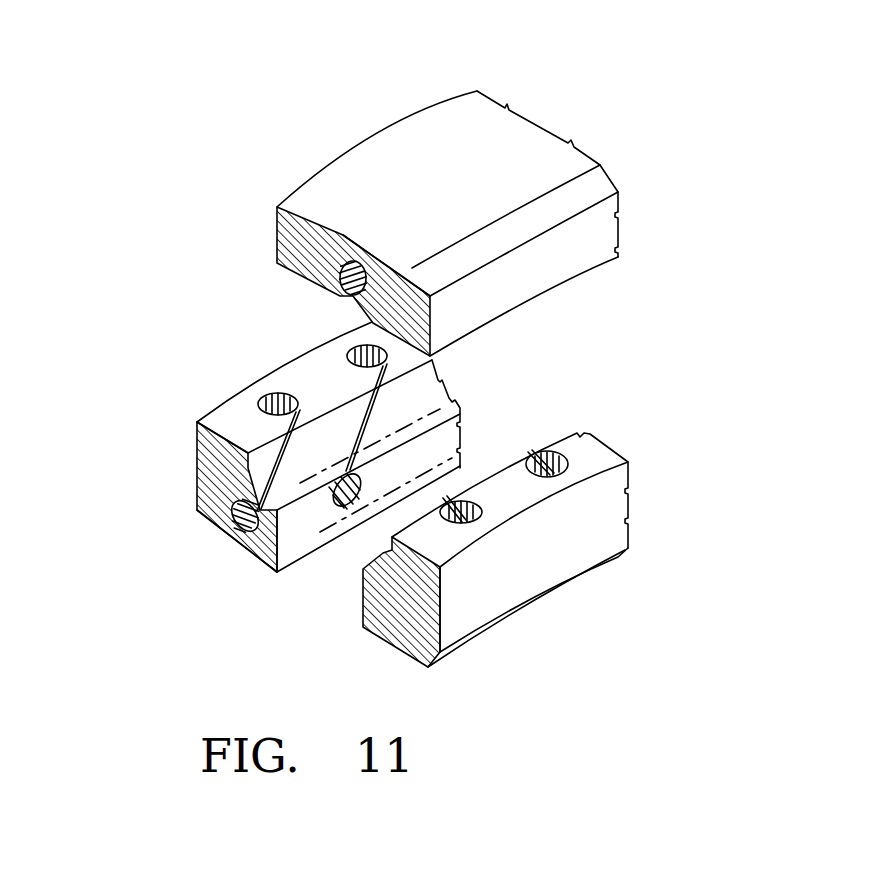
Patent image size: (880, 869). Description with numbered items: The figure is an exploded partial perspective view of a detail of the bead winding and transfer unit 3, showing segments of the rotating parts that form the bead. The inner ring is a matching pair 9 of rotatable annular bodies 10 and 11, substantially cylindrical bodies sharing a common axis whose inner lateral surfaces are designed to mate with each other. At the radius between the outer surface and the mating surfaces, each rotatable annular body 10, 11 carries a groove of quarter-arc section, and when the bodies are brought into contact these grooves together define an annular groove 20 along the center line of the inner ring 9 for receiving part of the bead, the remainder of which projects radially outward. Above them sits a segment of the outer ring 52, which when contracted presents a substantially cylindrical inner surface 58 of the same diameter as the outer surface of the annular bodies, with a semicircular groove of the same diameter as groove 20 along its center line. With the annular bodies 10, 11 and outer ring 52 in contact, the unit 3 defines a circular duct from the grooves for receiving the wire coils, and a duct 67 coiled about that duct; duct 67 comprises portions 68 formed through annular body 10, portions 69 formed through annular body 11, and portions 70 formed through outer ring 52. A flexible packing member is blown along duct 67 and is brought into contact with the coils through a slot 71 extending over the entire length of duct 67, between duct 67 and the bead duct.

The outer ring 52 is at (550, 115).
The bead winding and transfer unit 3 is at (662, 218).
The duct 67 is at (333, 258).
The portions of duct formed through outer ring 70 is at (343, 264).
The inner surface 58 is at (350, 308).
The annular groove 20 is at (313, 410).
The slot 71 is at (282, 436).
The rotatable annular body 10 is at (190, 445).
The portions of duct formed through rotatable annular body 68 is at (232, 510).
The matching pair of rotatable annular bodies 9 is at (275, 574).
The portions of duct formed through rotatable annular body 69 is at (549, 451).
The rotatable annular body 11 is at (640, 531).